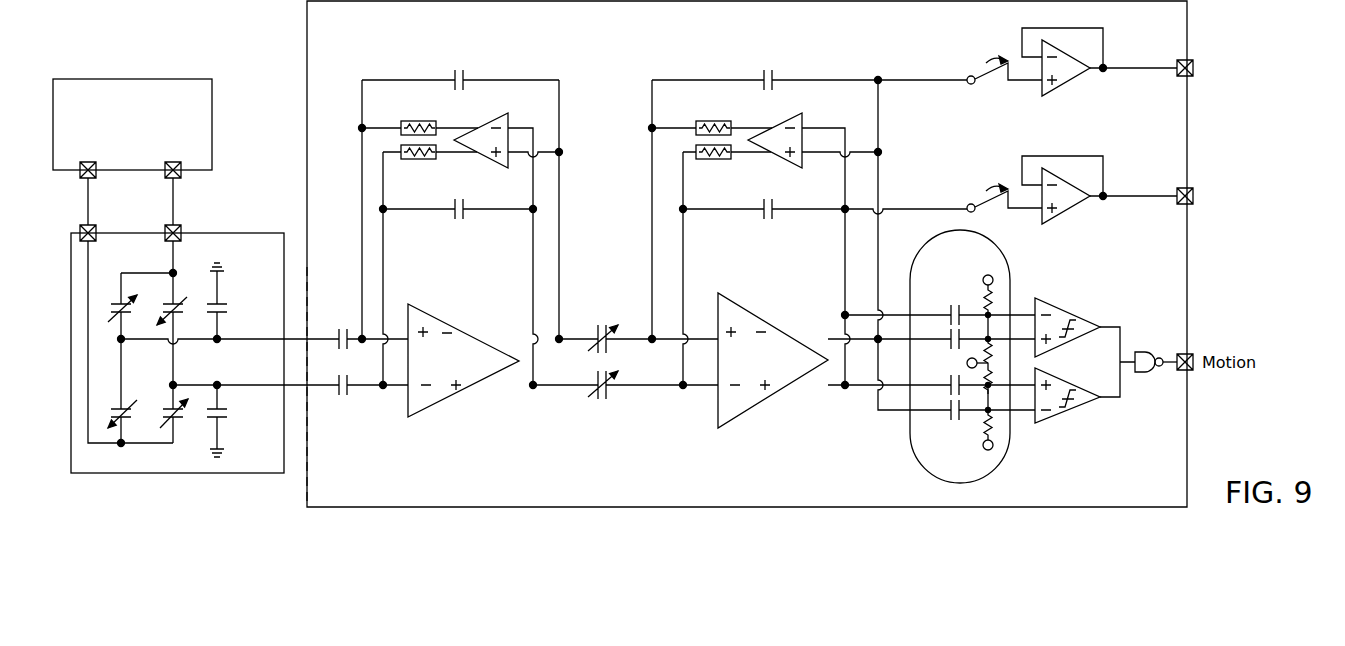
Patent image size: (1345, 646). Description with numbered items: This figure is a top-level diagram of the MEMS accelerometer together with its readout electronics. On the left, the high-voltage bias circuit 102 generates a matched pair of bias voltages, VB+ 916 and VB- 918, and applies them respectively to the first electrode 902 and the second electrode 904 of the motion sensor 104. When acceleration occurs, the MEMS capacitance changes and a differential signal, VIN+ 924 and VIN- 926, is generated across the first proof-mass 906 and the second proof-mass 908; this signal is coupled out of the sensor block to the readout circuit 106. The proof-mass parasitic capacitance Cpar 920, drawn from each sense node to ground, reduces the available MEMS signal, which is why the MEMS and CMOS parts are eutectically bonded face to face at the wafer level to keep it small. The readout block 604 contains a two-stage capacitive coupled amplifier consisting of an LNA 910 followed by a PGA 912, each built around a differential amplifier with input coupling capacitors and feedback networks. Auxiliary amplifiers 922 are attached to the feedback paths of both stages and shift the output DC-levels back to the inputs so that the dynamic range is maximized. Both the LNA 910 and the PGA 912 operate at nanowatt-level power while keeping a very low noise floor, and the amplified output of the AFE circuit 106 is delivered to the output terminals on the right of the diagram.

The bias circuit 102 is at (148, 79).
The motion sensor 104 is at (177, 381).
The readout circuit 106 is at (1187, 20).
The readout circuit 604 is at (720, 253).
The first electrode 902 is at (172, 272).
The second electrode 904 is at (122, 445).
The first proof-mass 906 is at (122, 341).
The second proof-mass 908 is at (174, 382).
The LNA 910 is at (453, 398).
The PGA 912 is at (762, 404).
The VB+ 916 is at (201, 202).
The VB- 918 is at (116, 202).
The proof-mass parasitic capacitance Cpar 920 is at (227, 300).
The auxiliary amplifier 922 is at (478, 124).
The VIN+ 924 is at (296, 336).
The VIN- 926 is at (297, 383).